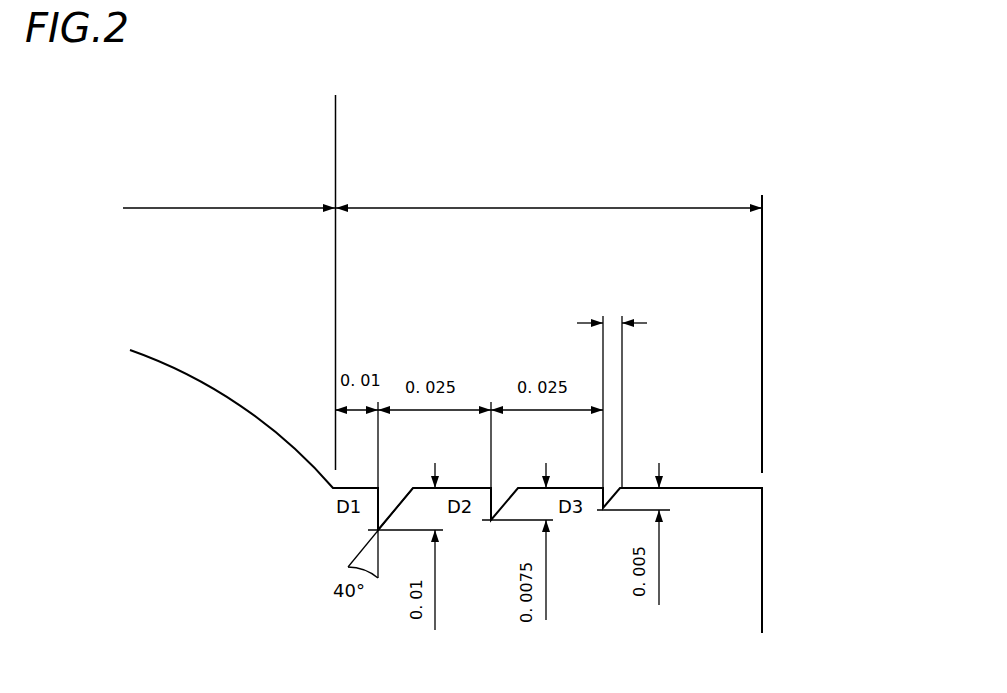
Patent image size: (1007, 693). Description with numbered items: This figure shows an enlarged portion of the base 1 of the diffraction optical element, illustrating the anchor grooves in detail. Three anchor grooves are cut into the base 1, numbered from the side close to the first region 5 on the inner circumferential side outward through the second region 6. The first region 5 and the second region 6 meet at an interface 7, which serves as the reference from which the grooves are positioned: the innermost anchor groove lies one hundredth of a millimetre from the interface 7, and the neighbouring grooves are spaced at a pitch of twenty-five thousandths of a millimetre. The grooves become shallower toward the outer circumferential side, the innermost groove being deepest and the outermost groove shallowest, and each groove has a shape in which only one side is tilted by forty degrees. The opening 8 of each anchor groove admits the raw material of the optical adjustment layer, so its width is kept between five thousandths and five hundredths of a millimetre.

The base 1 is at (784, 156).
The first region 5 is at (229, 195).
The second region 6 is at (549, 195).
The interface 7 is at (333, 262).
The opening 8 is at (622, 400).